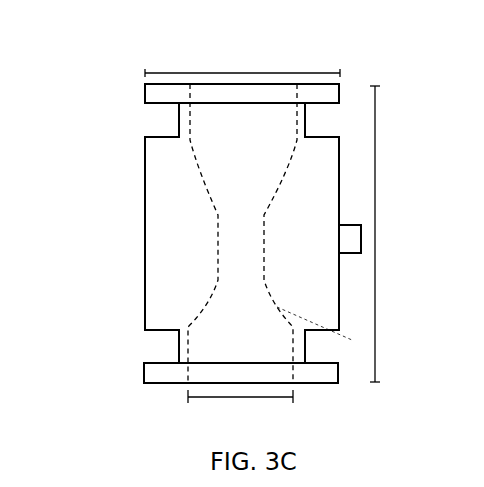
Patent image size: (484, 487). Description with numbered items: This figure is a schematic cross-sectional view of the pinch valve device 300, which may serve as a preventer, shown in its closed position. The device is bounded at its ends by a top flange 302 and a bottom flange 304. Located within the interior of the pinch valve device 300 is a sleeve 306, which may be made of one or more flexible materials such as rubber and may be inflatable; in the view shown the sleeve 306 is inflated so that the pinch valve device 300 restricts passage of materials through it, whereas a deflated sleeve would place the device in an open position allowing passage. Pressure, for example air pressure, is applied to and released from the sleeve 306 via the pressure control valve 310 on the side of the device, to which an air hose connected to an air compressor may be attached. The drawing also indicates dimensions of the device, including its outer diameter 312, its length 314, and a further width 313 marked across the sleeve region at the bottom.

The pinch valve device 300 is at (195, 212).
The top flange 302 is at (152, 90).
The bottom flange 304 is at (165, 375).
The sleeve 306 is at (273, 182).
The pressure control valve 310 is at (353, 235).
The outer diameter 312 is at (255, 72).
The channel width dimension 313 is at (220, 399).
The length 314 is at (375, 278).